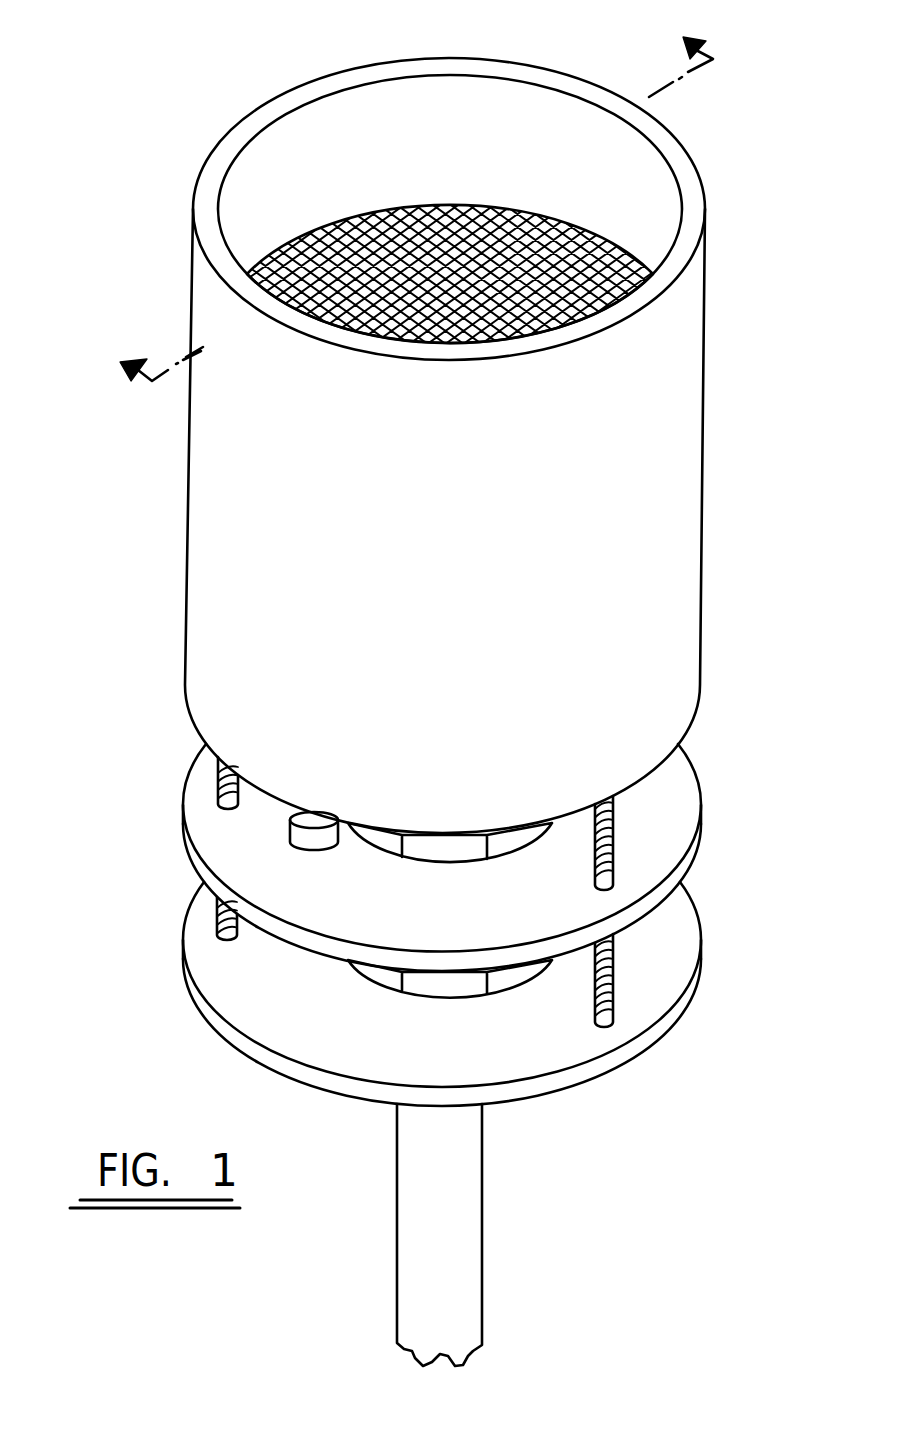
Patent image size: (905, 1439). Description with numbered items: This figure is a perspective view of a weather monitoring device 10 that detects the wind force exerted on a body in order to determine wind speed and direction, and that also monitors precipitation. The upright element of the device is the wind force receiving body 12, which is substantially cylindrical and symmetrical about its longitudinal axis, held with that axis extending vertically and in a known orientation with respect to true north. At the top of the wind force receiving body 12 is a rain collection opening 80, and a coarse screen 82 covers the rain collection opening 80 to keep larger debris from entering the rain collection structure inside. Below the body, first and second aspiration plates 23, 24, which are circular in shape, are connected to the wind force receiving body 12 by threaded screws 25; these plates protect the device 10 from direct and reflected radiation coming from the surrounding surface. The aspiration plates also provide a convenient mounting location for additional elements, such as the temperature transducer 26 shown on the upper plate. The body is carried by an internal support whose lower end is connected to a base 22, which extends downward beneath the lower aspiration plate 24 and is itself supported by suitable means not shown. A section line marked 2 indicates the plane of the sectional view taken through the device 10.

The weather monitoring device 10 is at (189, 72).
The wind force receiving body 12 is at (421, 550).
The rain collection opening 80 is at (421, 100).
The coarse screen 82 is at (536, 212).
The section line 2- 2 is at (416, 192).
The first aspiration plate 23 is at (686, 794).
The second aspiration plate 24 is at (686, 935).
The threaded screws 25 is at (617, 842).
The temperature transducer 26 is at (288, 829).
The base 22 is at (473, 1212).